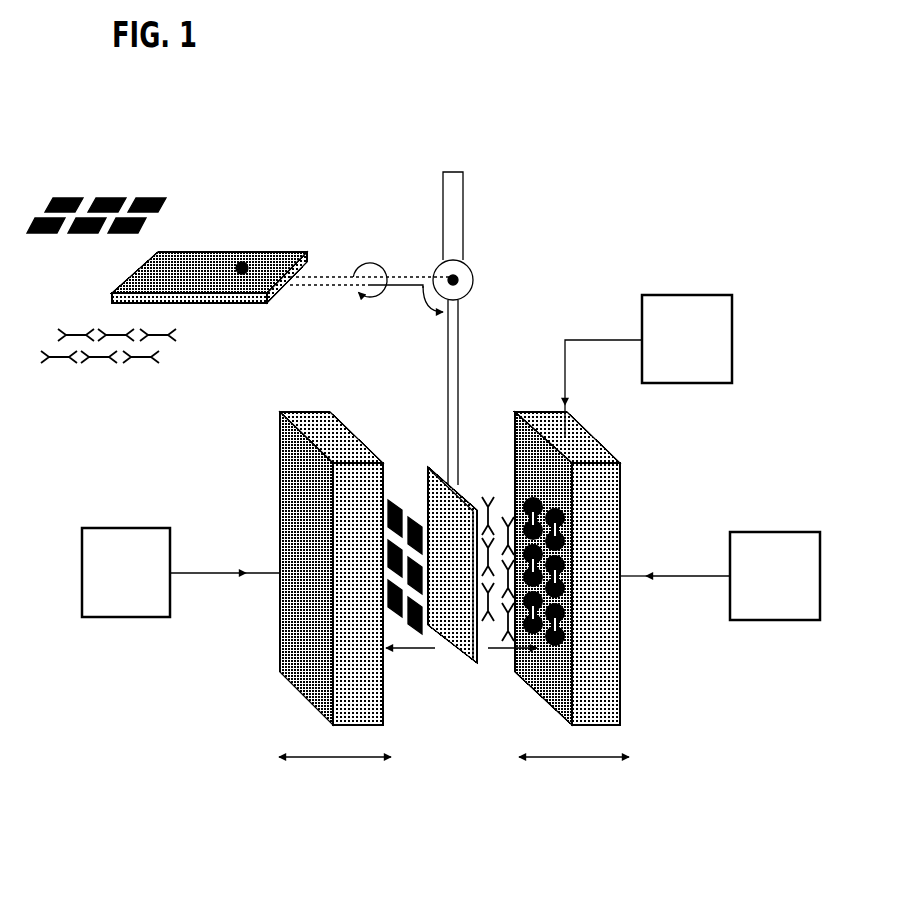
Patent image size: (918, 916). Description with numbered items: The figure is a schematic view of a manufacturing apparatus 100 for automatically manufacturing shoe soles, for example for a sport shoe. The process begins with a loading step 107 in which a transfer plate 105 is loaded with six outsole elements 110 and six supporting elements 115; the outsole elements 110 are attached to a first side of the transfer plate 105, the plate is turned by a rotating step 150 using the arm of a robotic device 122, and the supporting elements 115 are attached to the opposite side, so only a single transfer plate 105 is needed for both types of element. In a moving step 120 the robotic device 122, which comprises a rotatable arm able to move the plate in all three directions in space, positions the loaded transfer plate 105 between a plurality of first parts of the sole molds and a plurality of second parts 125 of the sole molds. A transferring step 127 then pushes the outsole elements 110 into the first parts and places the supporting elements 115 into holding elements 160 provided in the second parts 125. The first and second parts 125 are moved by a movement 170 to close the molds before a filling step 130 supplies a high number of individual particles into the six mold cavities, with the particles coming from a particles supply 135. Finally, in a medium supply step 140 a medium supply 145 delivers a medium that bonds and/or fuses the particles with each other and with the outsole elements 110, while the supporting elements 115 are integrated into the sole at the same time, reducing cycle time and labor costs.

The manufacturing apparatus 100 is at (603, 187).
The transfer plate 105 is at (242, 268).
The loading step 107 is at (173, 231).
The outsole element 110 is at (112, 190).
The supporting element 115 is at (98, 365).
The moving step 120 is at (420, 304).
The robotic device 122 is at (457, 280).
The second parts of the sole molds 125 is at (565, 560).
The transferring step 127 is at (410, 653).
The filling step 130 is at (603, 340).
The particles supply 135 is at (687, 339).
The medium supply step 140 is at (225, 572).
The medium supply 145 is at (451, 574).
The rotating step 150 is at (381, 264).
The holding element 160 is at (575, 599).
The movement of mold parts 170 is at (336, 760).